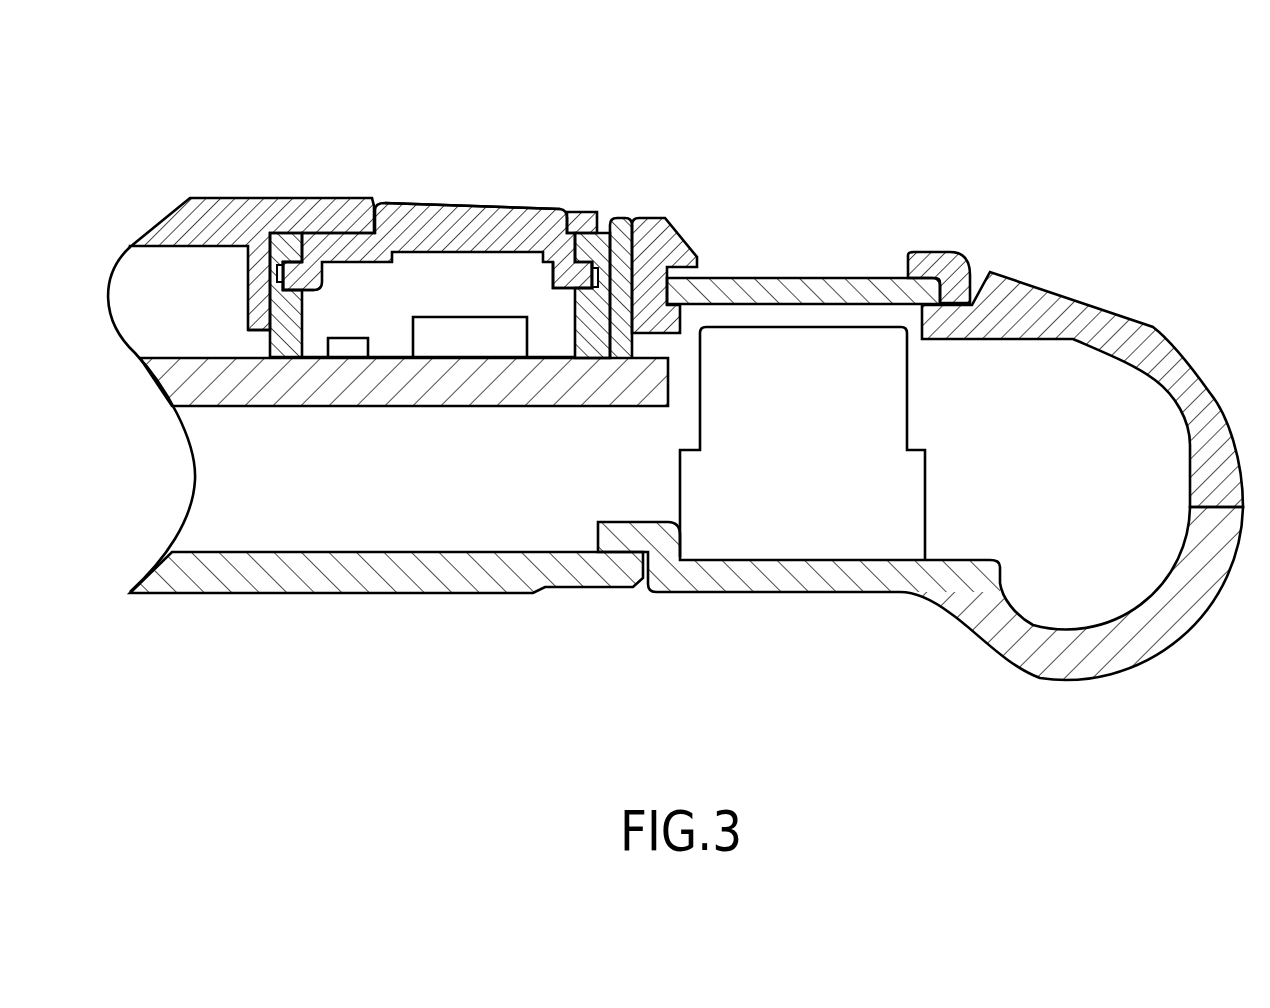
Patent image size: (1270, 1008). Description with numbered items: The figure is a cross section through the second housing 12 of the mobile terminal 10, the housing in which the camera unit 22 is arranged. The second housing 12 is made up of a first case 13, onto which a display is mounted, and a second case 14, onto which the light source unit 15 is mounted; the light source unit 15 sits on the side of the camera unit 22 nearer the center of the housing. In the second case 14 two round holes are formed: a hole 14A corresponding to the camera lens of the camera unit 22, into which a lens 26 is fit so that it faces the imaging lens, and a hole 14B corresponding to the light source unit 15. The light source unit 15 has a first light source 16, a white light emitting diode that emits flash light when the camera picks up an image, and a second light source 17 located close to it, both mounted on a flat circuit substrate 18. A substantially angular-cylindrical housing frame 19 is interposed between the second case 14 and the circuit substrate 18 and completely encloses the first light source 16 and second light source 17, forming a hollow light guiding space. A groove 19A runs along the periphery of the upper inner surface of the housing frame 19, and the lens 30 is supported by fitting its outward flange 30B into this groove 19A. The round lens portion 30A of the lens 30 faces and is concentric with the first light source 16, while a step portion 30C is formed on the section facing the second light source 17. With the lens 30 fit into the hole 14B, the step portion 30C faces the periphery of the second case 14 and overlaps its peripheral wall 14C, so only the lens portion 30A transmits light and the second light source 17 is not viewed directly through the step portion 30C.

The mobile terminal 10 is at (643, 436).
The second housing 12 is at (878, 660).
The first case 13 is at (1168, 665).
The second case 14 is at (756, 284).
The round hole 14A is at (912, 255).
The round hole 14B is at (552, 210).
The peripheral wall 14C is at (370, 207).
The light source unit 15 is at (375, 305).
The first light source 16 is at (480, 338).
The second light source 17 is at (358, 341).
The circuit substrate 18 is at (300, 392).
The housing frame 19 is at (267, 345).
The groove 19A is at (263, 205).
The camera unit 22 is at (912, 400).
The lens 26 is at (798, 278).
The lens 30 is at (447, 193).
The lens portion 30A is at (427, 207).
The flange 30B is at (607, 257).
The step portion 30C is at (313, 207).